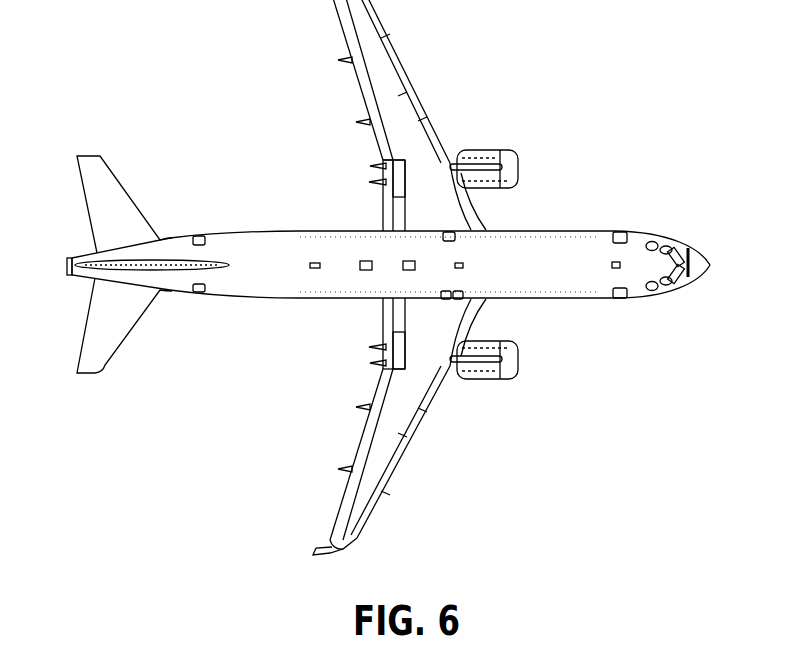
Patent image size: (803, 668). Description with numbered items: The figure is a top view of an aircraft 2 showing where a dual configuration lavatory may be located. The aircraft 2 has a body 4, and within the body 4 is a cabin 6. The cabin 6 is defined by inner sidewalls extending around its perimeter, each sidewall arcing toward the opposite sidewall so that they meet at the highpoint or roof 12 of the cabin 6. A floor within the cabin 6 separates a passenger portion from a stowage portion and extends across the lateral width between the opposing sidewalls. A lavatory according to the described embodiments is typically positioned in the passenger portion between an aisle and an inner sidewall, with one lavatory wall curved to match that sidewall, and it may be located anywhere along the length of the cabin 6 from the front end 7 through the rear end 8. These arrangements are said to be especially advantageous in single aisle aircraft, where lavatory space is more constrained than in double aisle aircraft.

The aircraft 2 is at (172, 105).
The body 4 is at (265, 264).
The cabin 6 is at (380, 282).
The front end 7 is at (588, 275).
The rear end 8 is at (235, 298).
The roof 12 is at (534, 248).